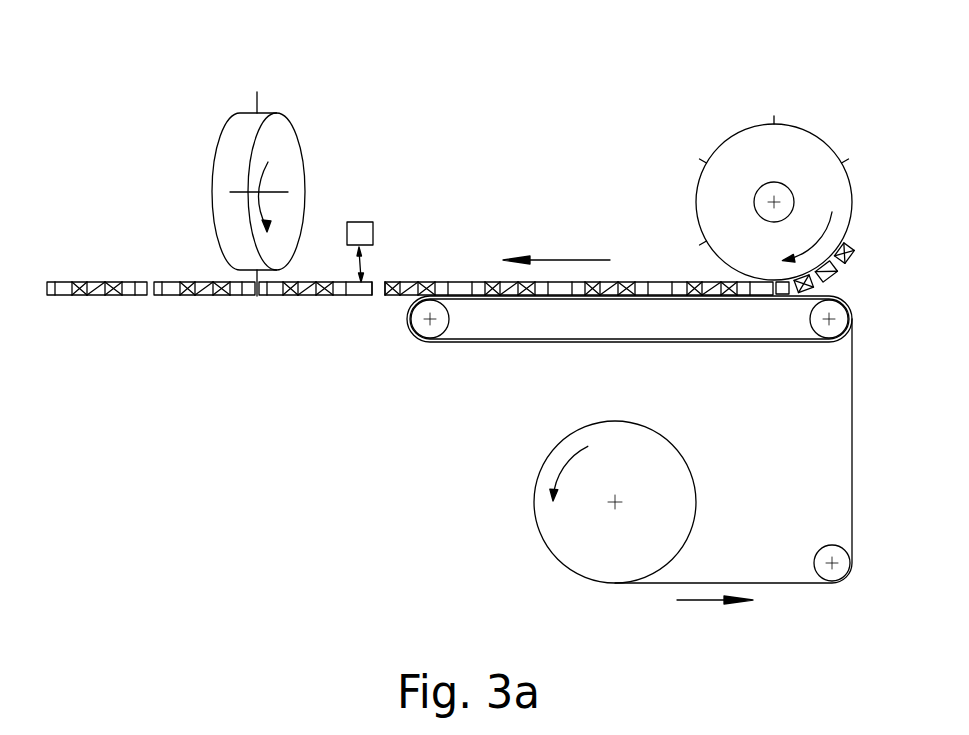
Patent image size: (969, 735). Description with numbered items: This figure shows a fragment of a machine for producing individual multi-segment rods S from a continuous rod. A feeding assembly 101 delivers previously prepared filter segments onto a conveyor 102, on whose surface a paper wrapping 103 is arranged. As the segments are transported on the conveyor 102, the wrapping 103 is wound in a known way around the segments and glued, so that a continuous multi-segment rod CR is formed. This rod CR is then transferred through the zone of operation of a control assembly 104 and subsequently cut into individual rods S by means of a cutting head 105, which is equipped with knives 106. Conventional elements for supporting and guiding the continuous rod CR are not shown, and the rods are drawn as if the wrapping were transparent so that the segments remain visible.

The feeding assembly 101 is at (728, 108).
The conveyor 102 is at (673, 297).
The paper wrapping 103 is at (852, 378).
The control assembly 104 is at (360, 230).
The cutting head 105 is at (277, 133).
The knives 106 is at (257, 293).
The multi-segment rods S is at (176, 266).
The multi-segment rod CR is at (371, 317).